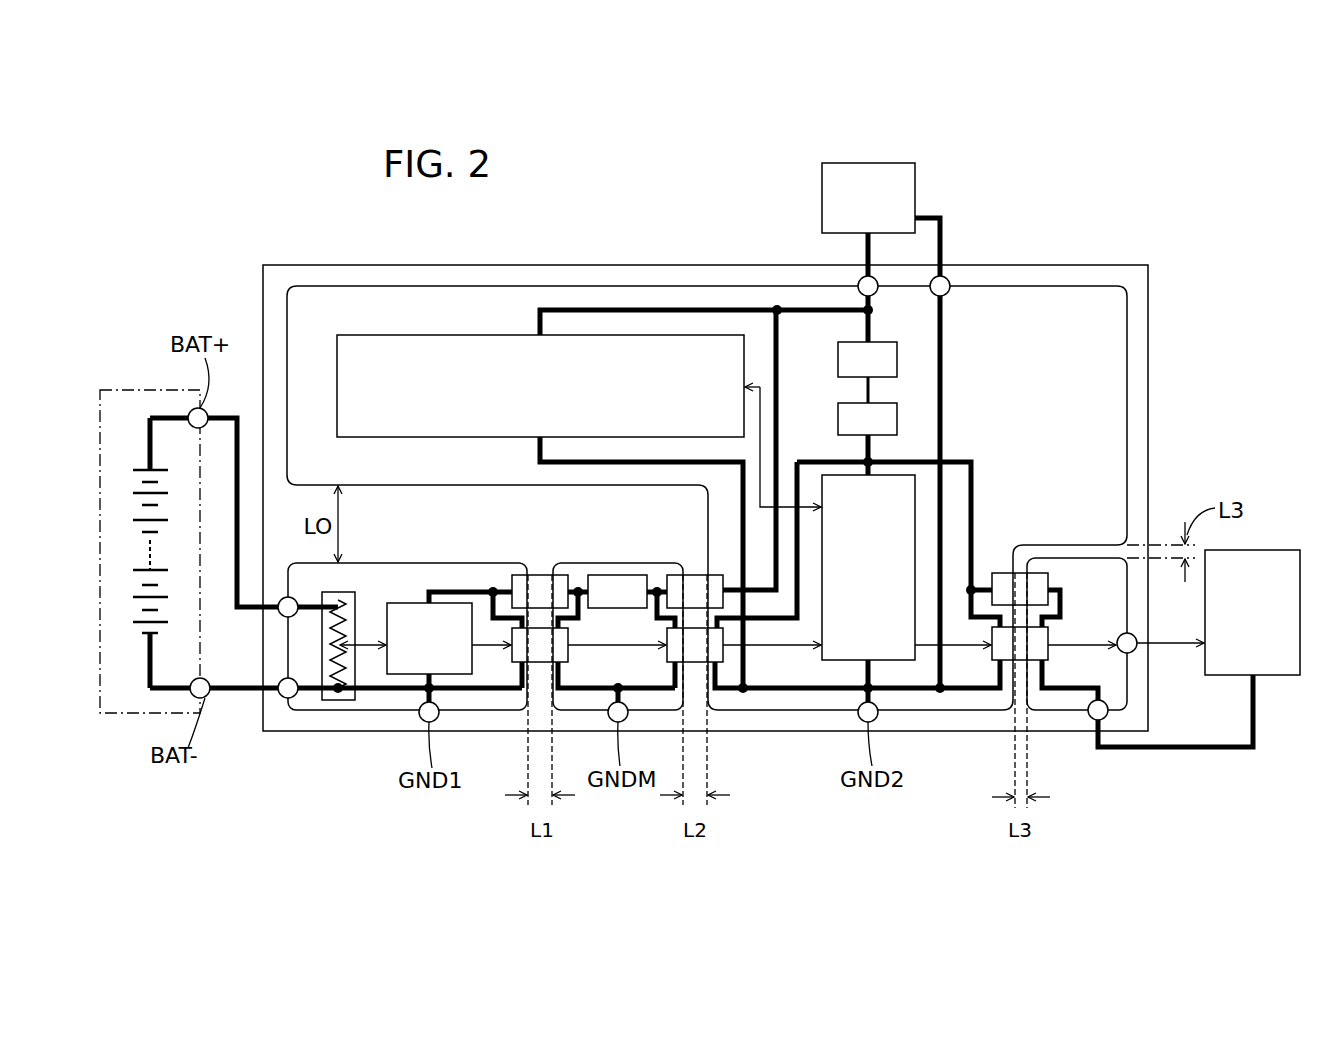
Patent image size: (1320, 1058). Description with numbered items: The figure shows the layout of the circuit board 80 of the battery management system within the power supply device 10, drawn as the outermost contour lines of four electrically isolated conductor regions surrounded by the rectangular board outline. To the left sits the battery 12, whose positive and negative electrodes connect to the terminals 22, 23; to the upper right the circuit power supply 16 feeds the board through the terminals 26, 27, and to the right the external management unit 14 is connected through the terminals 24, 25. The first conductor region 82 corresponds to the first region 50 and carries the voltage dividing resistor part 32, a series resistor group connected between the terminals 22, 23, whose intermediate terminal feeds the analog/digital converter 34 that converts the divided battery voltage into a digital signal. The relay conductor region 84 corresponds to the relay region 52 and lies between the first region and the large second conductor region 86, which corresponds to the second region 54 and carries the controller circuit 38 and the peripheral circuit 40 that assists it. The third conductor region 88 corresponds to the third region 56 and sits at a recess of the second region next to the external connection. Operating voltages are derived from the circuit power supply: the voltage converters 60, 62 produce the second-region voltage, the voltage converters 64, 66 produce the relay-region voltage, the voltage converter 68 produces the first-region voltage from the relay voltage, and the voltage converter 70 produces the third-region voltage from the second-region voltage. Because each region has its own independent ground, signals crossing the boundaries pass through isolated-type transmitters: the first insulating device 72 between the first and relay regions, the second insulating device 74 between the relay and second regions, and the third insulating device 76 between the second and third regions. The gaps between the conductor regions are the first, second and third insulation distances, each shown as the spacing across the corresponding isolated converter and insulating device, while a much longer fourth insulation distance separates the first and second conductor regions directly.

The power supply device 10 is at (178, 267).
The battery 12 is at (125, 390).
The external management unit 14 is at (1280, 550).
The circuit power supply 16 is at (883, 163).
The terminal 22 is at (280, 615).
The terminal 23 is at (283, 697).
The terminal 24 is at (1137, 652).
The terminal 25 is at (1092, 720).
The terminal 26 is at (860, 280).
The terminal 27 is at (948, 278).
The voltage dividing resistor part 32 is at (338, 702).
The analog/digital converter 34 is at (387, 667).
The controller circuit 38 is at (845, 662).
The peripheral circuit 40 is at (462, 335).
The first region 50 is at (427, 563).
The relay region 52 is at (583, 563).
The second region 54 is at (1110, 318).
The third region 56 is at (1117, 700).
The voltage converter 60 is at (887, 345).
The voltage converter 62 is at (887, 408).
The voltage converter 64 is at (698, 573).
The voltage converter 66 is at (617, 575).
The voltage converter 68 is at (540, 573).
The voltage converter 70 is at (1052, 578).
The first insulating device 72 is at (540, 665).
The second insulating device 74 is at (693, 665).
The third insulating device 76 is at (1010, 662).
The circuit board 80 is at (318, 265).
The first conductor region 82 is at (407, 602).
The relay conductor region 84 is at (618, 602).
The second conductor region 86 is at (766, 487).
The third conductor region 88 is at (1125, 673).